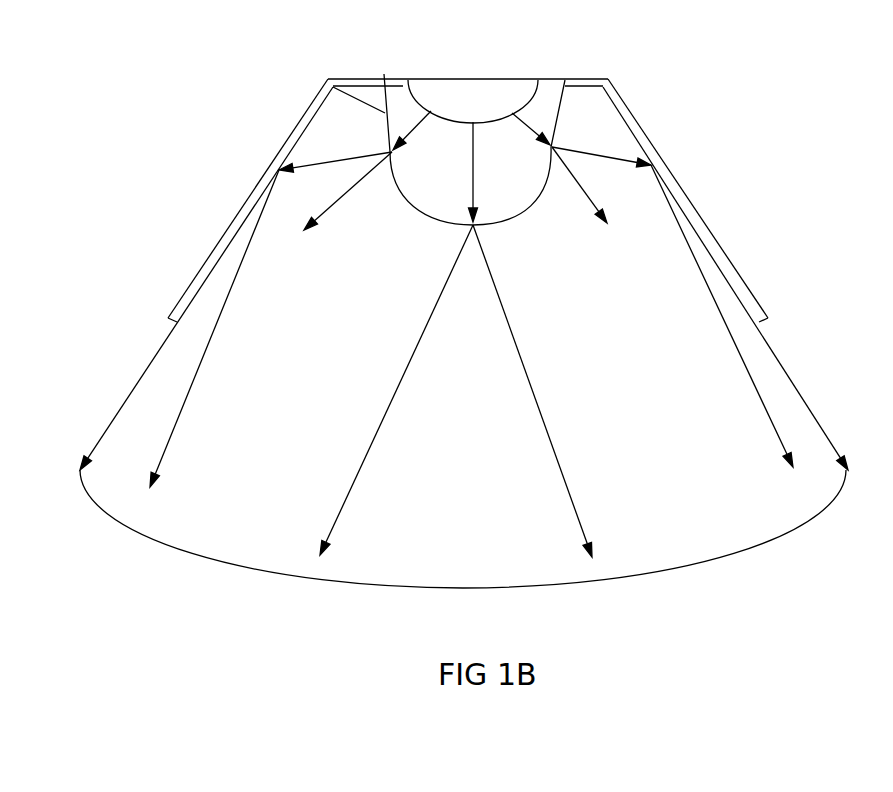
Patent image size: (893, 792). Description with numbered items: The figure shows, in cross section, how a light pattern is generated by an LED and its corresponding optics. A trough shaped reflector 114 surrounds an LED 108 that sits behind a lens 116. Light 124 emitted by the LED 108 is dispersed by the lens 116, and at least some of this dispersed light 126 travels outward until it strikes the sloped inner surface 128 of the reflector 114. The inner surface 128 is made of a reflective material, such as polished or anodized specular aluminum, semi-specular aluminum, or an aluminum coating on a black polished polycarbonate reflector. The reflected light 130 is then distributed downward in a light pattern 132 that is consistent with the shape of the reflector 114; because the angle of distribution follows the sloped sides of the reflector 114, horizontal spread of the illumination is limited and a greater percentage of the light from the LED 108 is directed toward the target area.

The LED 108 is at (494, 70).
The trough shaped reflector 114 is at (710, 200).
The lens 116 is at (388, 178).
The light 124 is at (424, 122).
The dispersed light 126 is at (464, 322).
The sloped inner surface 128 is at (347, 120).
The reflected light 130 is at (471, 326).
The light pattern 132 is at (157, 530).